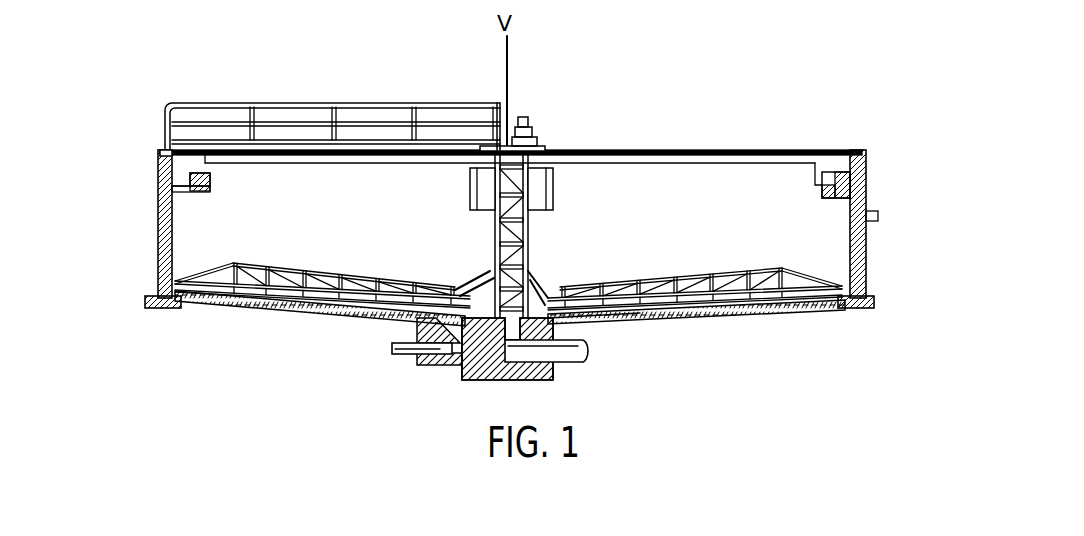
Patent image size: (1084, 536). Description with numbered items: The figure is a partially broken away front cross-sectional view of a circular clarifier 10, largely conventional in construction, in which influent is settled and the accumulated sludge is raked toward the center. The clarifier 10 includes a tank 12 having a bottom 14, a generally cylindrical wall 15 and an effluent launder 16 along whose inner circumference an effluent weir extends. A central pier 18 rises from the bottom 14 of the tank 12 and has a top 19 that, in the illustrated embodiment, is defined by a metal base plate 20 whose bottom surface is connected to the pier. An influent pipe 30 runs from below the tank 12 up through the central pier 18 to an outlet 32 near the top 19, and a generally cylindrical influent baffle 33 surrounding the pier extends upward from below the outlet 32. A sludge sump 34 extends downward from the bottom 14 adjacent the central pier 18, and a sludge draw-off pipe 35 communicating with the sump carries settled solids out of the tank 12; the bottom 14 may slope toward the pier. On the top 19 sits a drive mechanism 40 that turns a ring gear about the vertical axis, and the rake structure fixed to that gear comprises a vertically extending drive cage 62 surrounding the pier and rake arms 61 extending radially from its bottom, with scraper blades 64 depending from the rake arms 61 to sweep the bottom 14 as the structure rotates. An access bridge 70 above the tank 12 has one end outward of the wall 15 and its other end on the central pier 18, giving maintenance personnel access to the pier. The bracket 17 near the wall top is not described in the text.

The clarifier 10 is at (333, 333).
The tank 12 is at (866, 250).
The bottom 14 is at (323, 297).
The wall 15 is at (158, 243).
The effluent launder 16 is at (862, 170).
The support bracket 17 is at (826, 172).
The central pier 18 is at (500, 229).
The top 19 is at (553, 152).
The base plate 20 is at (541, 147).
The influent pipe 30 is at (565, 352).
The outlet 32 is at (512, 183).
The influent baffle 33 is at (553, 190).
The sludge pump 34 is at (466, 332).
The sludge draw-off pipe 35 is at (403, 348).
The drive mechanism 40 is at (536, 108).
The rake arms 61 is at (246, 269).
The drive cage 62 is at (532, 257).
The scraper blade 64 is at (650, 306).
The access bridge 70 is at (303, 143).